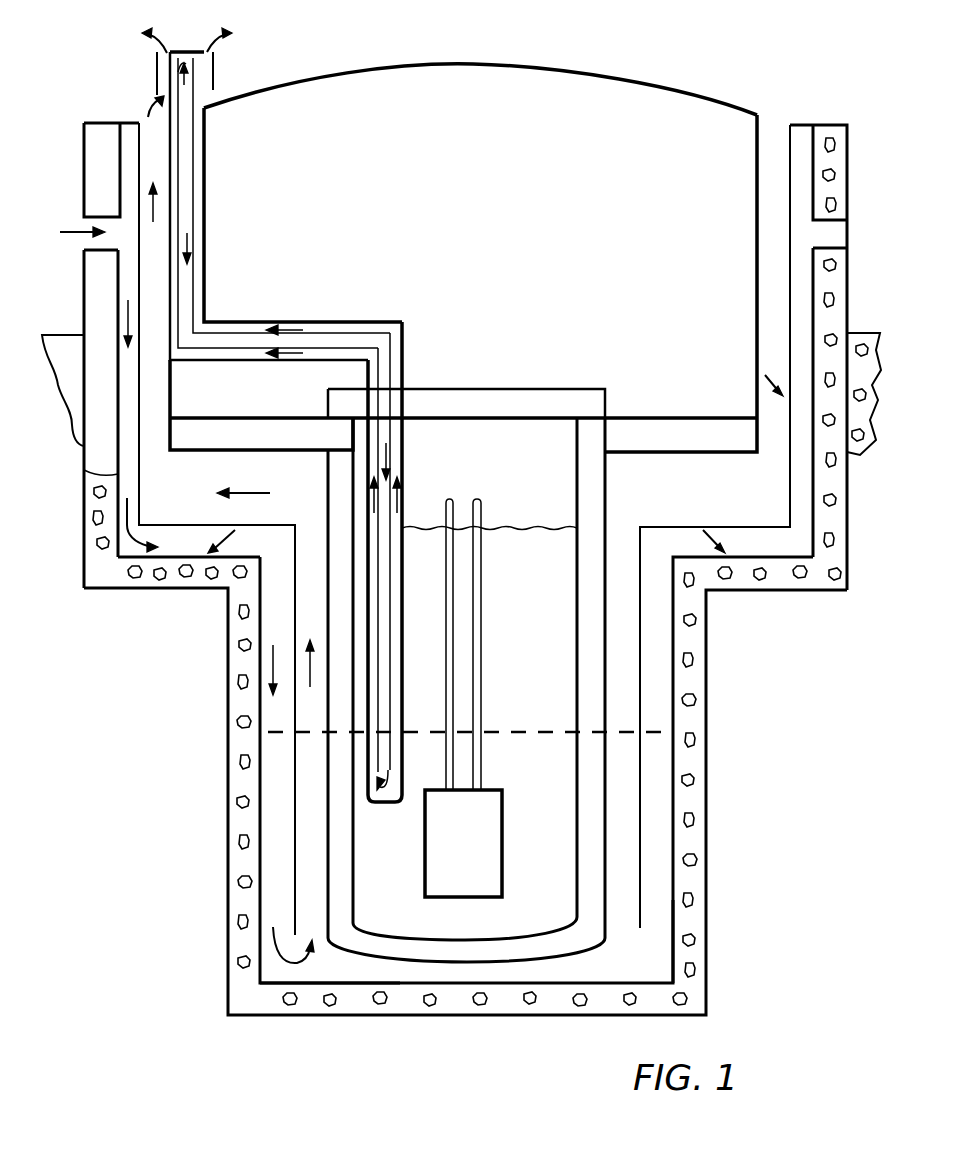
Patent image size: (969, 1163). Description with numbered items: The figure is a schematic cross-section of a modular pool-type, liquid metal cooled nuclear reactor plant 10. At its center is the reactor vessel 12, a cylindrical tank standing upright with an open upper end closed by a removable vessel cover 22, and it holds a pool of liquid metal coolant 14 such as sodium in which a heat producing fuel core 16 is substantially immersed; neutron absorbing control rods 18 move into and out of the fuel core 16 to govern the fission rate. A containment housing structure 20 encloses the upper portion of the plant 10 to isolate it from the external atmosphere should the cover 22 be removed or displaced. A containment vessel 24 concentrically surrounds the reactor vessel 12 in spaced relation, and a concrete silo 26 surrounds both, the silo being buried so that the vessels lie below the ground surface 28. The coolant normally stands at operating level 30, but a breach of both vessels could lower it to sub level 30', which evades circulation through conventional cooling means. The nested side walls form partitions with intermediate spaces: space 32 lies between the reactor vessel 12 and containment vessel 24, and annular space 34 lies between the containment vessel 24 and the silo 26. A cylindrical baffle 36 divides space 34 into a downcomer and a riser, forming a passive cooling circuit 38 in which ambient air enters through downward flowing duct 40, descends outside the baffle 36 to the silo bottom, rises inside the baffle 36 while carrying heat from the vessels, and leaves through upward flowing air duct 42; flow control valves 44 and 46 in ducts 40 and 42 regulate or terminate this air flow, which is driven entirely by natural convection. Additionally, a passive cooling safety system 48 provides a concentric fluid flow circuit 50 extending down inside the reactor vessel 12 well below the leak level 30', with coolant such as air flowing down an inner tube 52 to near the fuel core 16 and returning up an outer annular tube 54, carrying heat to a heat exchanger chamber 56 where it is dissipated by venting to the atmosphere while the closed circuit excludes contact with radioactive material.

The nuclear reactor plant 10 is at (678, 83).
The reactor vessel 12 is at (578, 493).
The liquid metal coolant 14 is at (556, 858).
The fuel core 16 is at (478, 858).
The control rods 18 is at (482, 618).
The containment housing structure 20 is at (368, 72).
The vessel cover 22 is at (537, 388).
The containment vessel 24 is at (606, 656).
The concrete silo 26 is at (707, 711).
The ground surface 28 is at (840, 453).
The normal operating level 30 is at (489, 498).
The sub level 30' is at (467, 709).
The space 32 is at (592, 856).
The annular space 34 is at (644, 957).
The cylindrical baffle 36 is at (642, 904).
The passive cooling fluid flow heat exchanger circuit 38 is at (270, 967).
The downward flowing duct 40 is at (130, 480).
The upward flowing air duct 42 is at (175, 500).
The air coolant flow control valve 44 is at (213, 545).
The air coolant flow control valve 46 is at (147, 395).
The passive cooling safety system 48 is at (408, 367).
The fluid flow circuit 50 is at (405, 570).
The inner tube 52 is at (393, 685).
The outer annular tube 54 is at (407, 722).
The chamber 56 is at (215, 72).